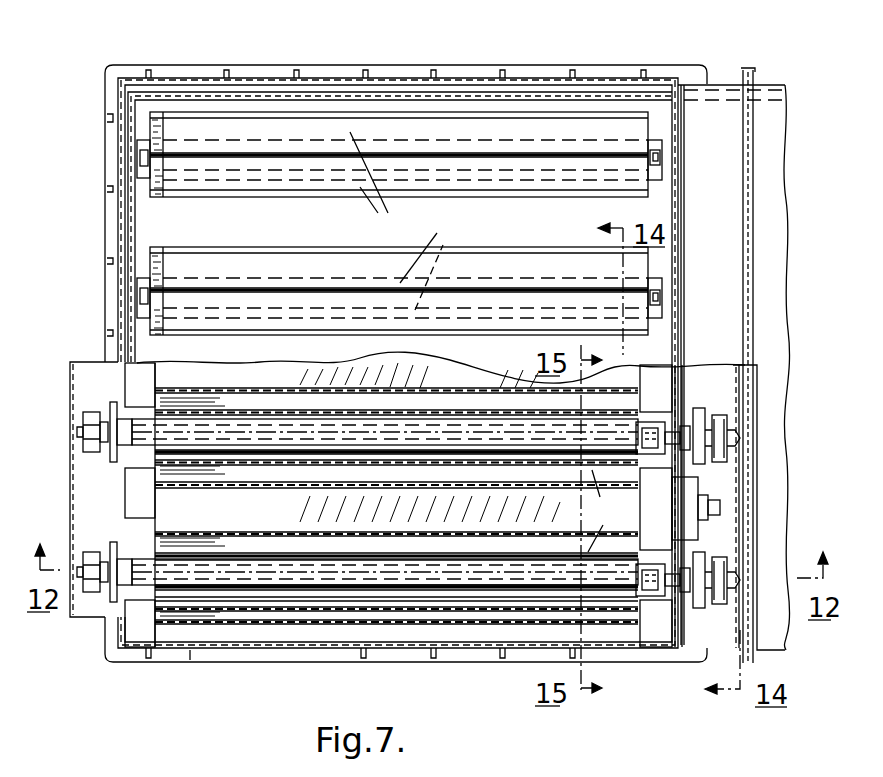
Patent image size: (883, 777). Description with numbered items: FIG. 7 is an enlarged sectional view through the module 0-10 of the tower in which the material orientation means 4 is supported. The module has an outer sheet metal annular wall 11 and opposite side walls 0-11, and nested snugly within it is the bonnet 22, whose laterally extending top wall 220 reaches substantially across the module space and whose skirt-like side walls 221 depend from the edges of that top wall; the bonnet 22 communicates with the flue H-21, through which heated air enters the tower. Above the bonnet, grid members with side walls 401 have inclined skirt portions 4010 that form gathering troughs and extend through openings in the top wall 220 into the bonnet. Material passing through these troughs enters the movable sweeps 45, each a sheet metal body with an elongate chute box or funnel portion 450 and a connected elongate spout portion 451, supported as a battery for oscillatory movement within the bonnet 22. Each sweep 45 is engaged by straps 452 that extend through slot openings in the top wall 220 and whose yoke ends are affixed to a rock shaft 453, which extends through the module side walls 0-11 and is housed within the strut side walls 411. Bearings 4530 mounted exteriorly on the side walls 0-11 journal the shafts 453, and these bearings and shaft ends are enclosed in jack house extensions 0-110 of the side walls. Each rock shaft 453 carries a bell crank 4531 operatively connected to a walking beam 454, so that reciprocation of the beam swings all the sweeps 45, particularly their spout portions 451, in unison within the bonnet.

The material orientation means 4 is at (118, 58).
The module 0-10 is at (100, 111).
The module side walls 0-11 is at (117, 160).
The bonnet 22 is at (162, 214).
The skirt-like side walls 221 is at (134, 229).
The outer sheet metal annular wall 11 is at (678, 206).
The movable sweeps 45 is at (288, 266).
The chute box or funnel portion 450 is at (381, 185).
The spout portion 451 is at (440, 264).
The straps 452 is at (662, 158).
The flue H-21 is at (762, 336).
The jack house extensions 0-110 is at (70, 372).
The top wall 220 is at (200, 384).
The skirt portions 4010 is at (410, 406).
The side walls 401 is at (240, 483).
The rock shaft 453 is at (180, 436).
The bearings 4530 is at (90, 433).
The bell crank 4531 is at (728, 440).
The walking beam 454 is at (740, 512).
The strut side walls 411 is at (610, 511).